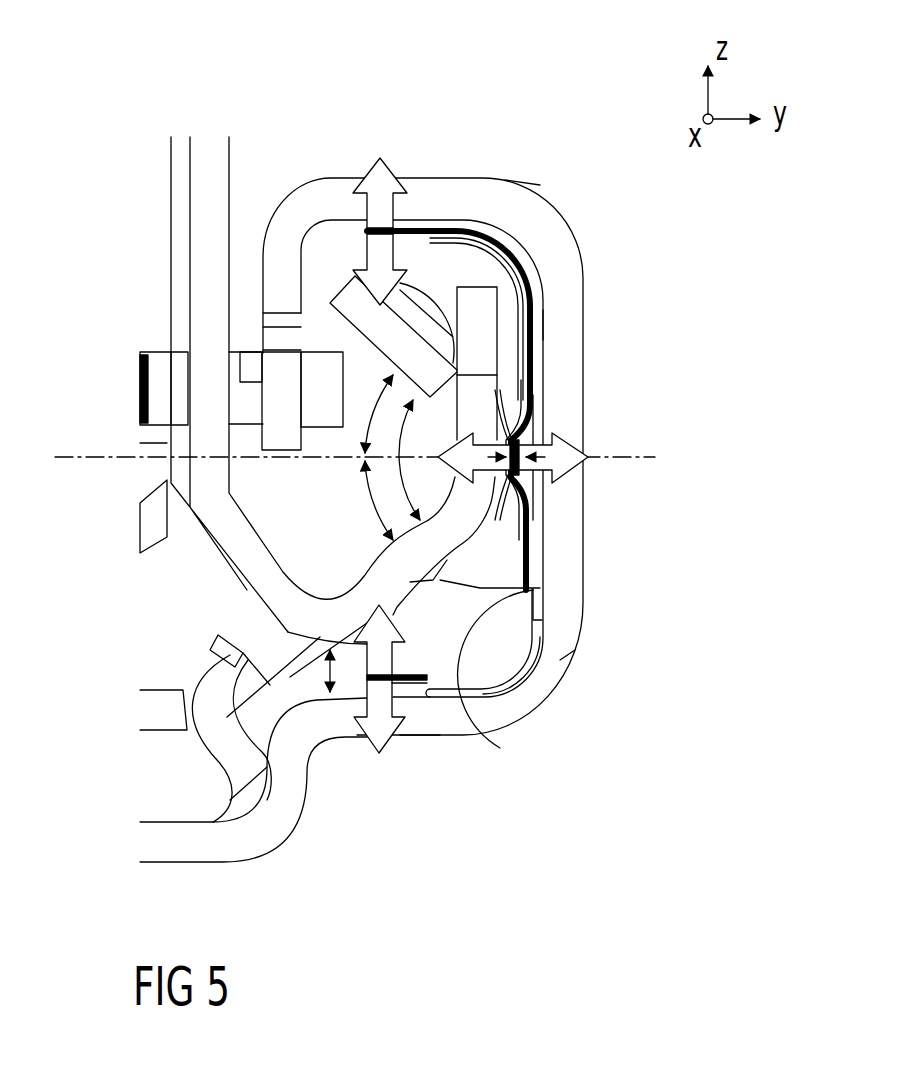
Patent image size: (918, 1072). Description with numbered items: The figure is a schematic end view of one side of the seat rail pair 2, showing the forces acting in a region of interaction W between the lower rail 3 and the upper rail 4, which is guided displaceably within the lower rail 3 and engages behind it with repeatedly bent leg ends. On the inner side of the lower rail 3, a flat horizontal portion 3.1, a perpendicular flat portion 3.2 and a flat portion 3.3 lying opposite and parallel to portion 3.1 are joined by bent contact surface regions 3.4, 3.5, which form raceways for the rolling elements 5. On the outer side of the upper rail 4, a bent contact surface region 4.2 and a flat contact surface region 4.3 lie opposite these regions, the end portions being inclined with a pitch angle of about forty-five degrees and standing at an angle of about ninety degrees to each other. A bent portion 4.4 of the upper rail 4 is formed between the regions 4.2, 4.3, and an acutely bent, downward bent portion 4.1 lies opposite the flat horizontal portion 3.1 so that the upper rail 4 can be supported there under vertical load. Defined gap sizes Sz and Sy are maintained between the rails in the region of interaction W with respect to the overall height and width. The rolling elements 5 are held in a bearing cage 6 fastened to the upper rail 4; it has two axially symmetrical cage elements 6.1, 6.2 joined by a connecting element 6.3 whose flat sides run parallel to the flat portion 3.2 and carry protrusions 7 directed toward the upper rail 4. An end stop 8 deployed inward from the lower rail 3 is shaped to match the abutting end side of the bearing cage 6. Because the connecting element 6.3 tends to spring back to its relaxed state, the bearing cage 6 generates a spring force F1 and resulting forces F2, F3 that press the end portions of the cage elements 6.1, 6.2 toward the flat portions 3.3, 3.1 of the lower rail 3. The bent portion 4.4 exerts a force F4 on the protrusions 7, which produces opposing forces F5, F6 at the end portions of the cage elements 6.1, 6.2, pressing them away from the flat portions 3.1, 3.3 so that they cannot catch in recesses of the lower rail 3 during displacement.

The seat rail pair 2 is at (260, 98).
The lower rail 3 is at (466, 190).
The flat horizontal portion 3.1 is at (413, 717).
The flat portion 3.2 is at (547, 323).
The flat portion 3.3 is at (355, 222).
The bent contact surface region 3.4 is at (515, 705).
The bent contact surface region 3.5 is at (547, 237).
The upper rail 4 is at (200, 193).
The bent portion 4.1 is at (320, 625).
The bent contact surface region 4.2 is at (433, 580).
The flat contact surface region 4.3 is at (425, 345).
The bent portion 4.4 is at (505, 512).
The rolling elements 5 is at (508, 242).
The bearing cage 6 is at (431, 252).
The cage element 6.1 is at (468, 205).
The cage element 6.2 is at (432, 632).
The connecting element 6.3 is at (560, 437).
The protrusions 7 is at (497, 403).
The end stop 8 is at (483, 660).
The region of interaction W is at (512, 440).
The spring force F1 is at (430, 473).
The force F2 is at (380, 156).
The force F3 is at (388, 748).
The force F4 is at (565, 462).
The force F5 is at (380, 253).
The force F6 is at (290, 640).
The gap size Sy is at (520, 475).
The gap size Sz is at (333, 695).